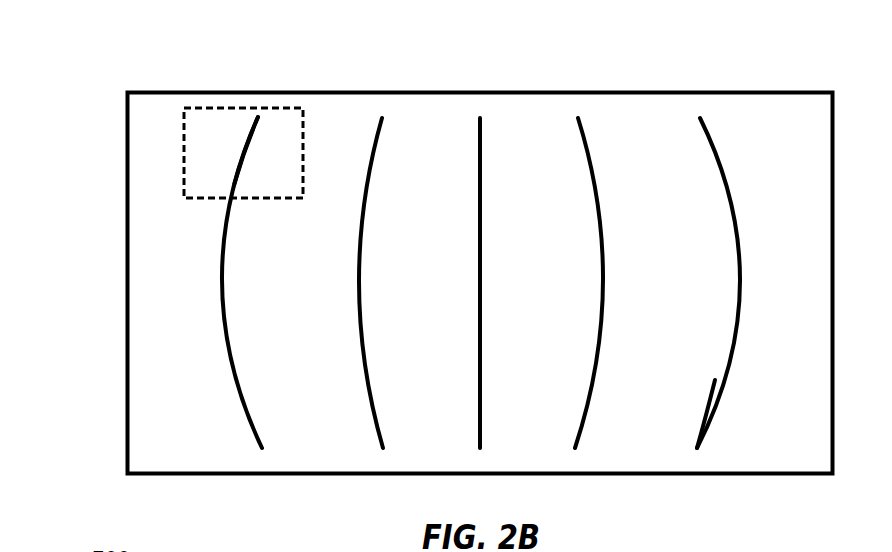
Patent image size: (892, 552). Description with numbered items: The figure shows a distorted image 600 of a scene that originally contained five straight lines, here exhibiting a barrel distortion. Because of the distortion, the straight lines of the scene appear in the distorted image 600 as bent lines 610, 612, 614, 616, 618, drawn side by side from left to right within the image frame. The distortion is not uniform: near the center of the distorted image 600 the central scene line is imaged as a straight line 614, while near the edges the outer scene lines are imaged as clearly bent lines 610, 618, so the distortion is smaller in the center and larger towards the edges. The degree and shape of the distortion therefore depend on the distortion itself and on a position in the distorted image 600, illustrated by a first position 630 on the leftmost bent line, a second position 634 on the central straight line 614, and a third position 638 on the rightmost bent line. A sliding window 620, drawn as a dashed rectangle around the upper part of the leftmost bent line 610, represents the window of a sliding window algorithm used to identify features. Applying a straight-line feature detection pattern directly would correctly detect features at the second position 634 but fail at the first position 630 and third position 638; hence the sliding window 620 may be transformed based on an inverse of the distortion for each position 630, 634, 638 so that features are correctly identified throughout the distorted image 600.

The distorted image 600 is at (97, 110).
The bent line 610 is at (250, 430).
The bent line 612 is at (373, 145).
The straight line 614 is at (478, 147).
The bent line 616 is at (585, 138).
The bent line 618 is at (710, 138).
The sliding window 620 is at (243, 106).
The first position 630 is at (267, 188).
The second position 634 is at (507, 298).
The third position 638 is at (738, 430).